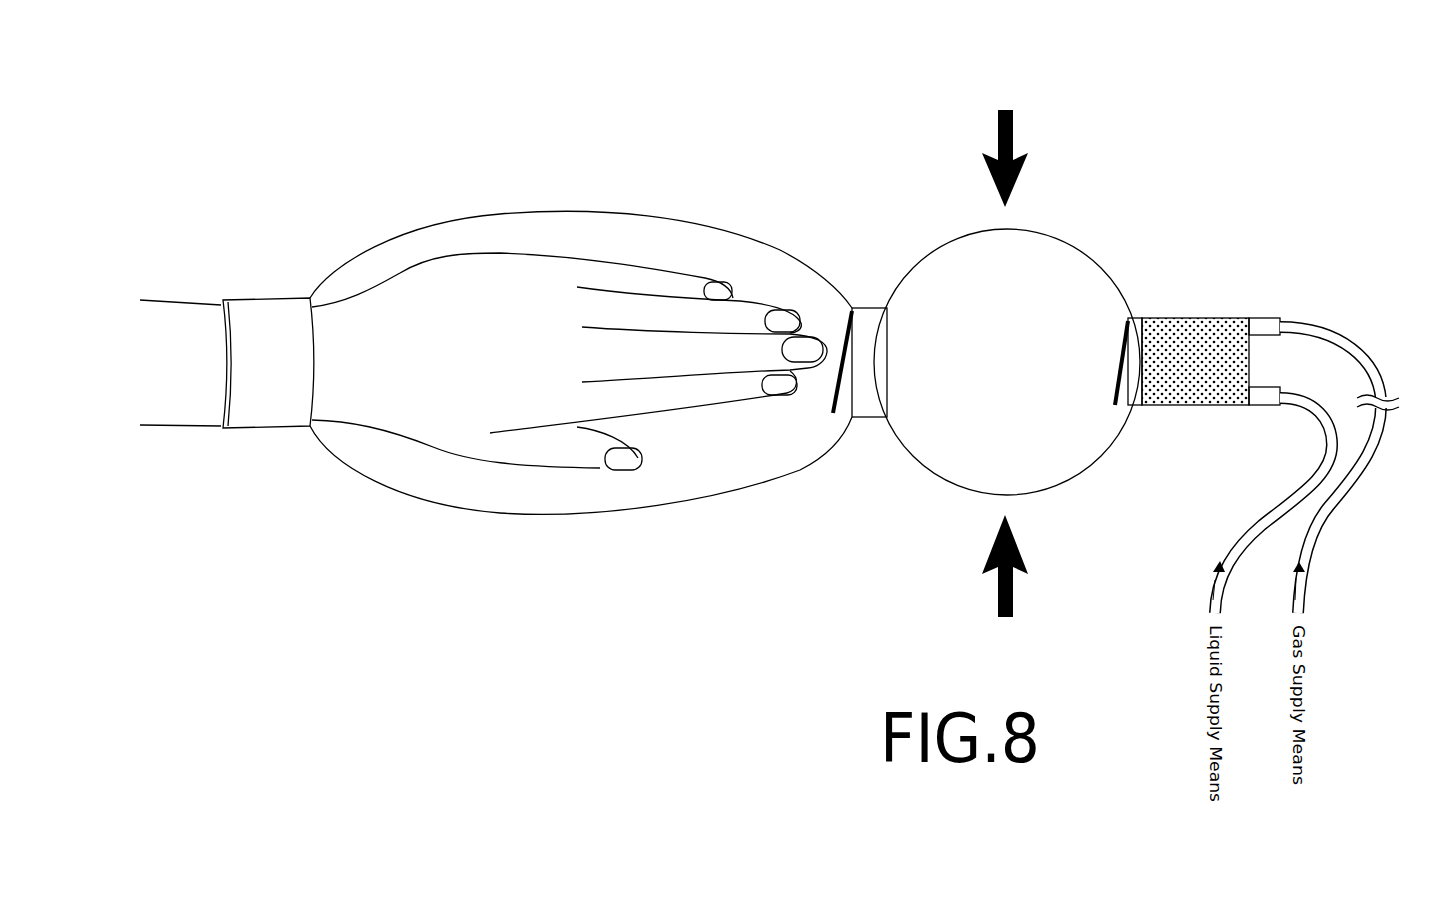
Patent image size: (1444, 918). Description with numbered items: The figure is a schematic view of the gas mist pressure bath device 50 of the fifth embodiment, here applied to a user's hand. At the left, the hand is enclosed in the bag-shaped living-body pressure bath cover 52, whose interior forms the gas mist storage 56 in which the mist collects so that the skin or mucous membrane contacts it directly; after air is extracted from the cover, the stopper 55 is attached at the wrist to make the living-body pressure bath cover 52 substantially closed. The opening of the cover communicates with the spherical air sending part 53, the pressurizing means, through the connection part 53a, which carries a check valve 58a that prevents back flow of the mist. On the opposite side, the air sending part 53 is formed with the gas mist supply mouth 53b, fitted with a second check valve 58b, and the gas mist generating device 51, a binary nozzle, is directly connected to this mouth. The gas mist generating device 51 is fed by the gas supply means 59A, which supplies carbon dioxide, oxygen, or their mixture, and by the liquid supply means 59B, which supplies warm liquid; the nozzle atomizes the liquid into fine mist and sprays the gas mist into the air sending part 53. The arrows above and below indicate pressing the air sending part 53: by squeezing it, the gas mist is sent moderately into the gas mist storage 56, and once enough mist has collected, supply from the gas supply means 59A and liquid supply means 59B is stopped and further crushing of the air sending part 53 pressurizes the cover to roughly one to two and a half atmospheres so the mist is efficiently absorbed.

The gas mist pressure bath device 50 is at (1298, 178).
The gas mist generating device 51 is at (1195, 317).
The living-body pressure bath cover 52 is at (622, 212).
The air sending part 53 is at (1090, 465).
The connection part 53a is at (868, 306).
The gas mist supply mouth 53b is at (1132, 317).
The stopper 55 is at (264, 297).
The gas mist storage 56 is at (760, 458).
The check valve 58a is at (836, 367).
The check valve 58b is at (1117, 367).
The gas supply means 59A is at (1313, 640).
The liquid supply means 59B is at (1200, 640).